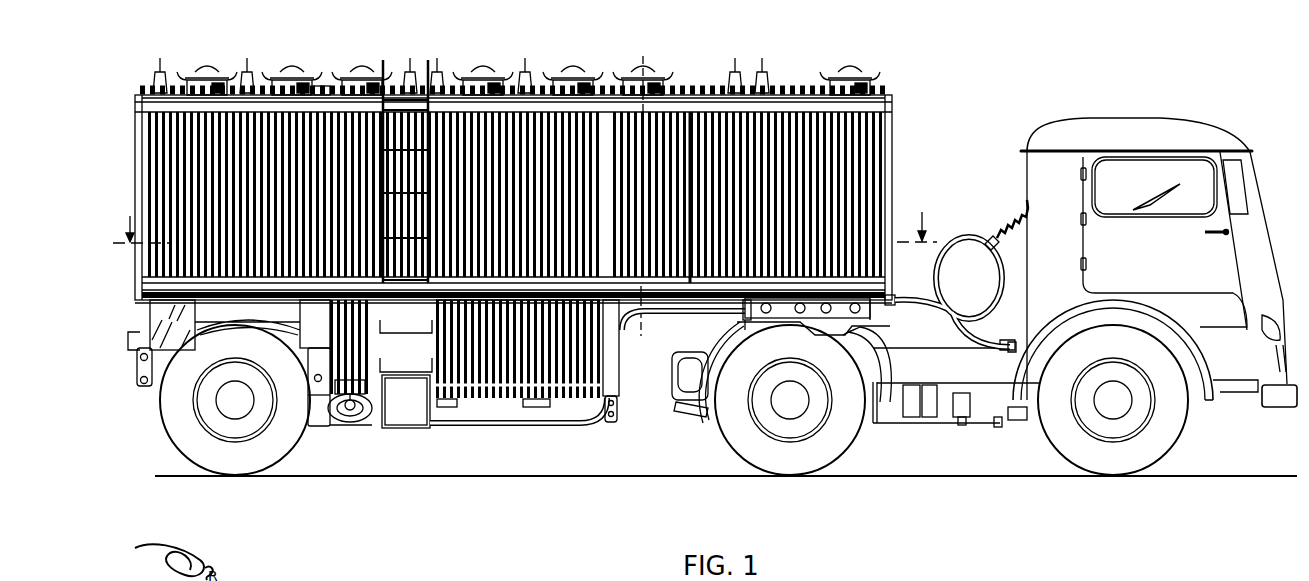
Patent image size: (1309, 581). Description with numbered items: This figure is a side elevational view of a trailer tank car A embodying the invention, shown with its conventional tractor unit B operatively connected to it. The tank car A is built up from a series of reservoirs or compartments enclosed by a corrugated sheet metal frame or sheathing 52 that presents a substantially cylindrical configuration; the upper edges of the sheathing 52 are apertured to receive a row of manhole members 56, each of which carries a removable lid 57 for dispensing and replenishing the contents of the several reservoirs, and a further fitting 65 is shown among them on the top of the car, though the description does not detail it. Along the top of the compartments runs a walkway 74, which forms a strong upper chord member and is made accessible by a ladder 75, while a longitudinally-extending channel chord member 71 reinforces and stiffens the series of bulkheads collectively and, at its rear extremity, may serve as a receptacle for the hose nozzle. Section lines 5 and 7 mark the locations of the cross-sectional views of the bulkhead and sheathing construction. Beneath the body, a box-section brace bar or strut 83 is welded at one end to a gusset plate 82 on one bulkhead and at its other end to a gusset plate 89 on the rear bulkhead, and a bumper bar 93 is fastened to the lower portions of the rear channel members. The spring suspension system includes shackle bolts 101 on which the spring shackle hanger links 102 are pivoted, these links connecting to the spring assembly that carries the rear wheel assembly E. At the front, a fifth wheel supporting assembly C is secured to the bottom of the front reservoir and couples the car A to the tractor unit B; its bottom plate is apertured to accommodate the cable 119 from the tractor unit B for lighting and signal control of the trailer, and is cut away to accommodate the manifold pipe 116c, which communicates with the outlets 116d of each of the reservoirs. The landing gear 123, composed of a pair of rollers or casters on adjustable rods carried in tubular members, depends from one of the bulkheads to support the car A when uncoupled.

The trailer tank car A is at (550, 59).
The tractor unit B is at (1108, 113).
The fifth wheel supporting assembly C is at (883, 321).
The rear wheel assembly E is at (297, 452).
The section line 5 is at (525, 218).
The section line 7 is at (642, 197).
The sheet metal frame 52 is at (690, 293).
The manhole member 56 is at (667, 92).
The removable lid 57 is at (587, 74).
The cap 65 is at (322, 94).
The chord member 71 is at (178, 293).
The walkway 74 is at (256, 108).
The ladder 75 is at (386, 60).
The gusset plate 82 is at (322, 345).
The brace bar 83 is at (253, 321).
The gusset plate 89 is at (189, 325).
The bumper bar 93 is at (128, 332).
The shackle bolt 101 is at (140, 356).
The spring shackle hanger link 102 is at (142, 371).
The manifold pipe 116c is at (525, 424).
The outlet 116d is at (527, 404).
The cable 119 is at (989, 284).
The landing gear 123 is at (620, 404).